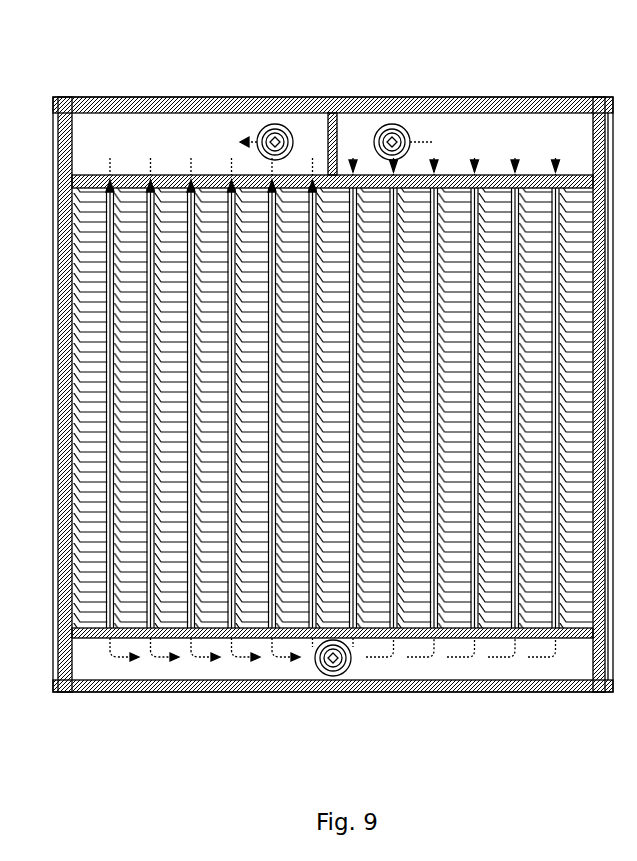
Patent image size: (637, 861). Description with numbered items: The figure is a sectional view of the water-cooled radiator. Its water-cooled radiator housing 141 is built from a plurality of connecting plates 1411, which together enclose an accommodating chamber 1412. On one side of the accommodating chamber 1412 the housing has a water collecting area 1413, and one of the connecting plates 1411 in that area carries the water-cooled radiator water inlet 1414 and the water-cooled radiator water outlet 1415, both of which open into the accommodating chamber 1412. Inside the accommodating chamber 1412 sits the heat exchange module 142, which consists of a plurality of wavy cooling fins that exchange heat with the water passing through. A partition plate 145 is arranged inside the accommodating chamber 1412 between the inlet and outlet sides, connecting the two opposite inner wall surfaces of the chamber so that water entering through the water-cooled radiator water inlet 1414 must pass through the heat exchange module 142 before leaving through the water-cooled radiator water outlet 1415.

The water-cooled radiator housing 141 is at (128, 87).
The connecting plate 1411 is at (490, 97).
The accommodating chamber 1412 is at (84, 138).
The water collecting area 1413 is at (309, 118).
The water-cooled radiator water inlet 1414 is at (394, 123).
The water-cooled radiator water outlet 1415 is at (273, 123).
The partition 145 is at (337, 132).
The heat exchange module 142 is at (82, 642).